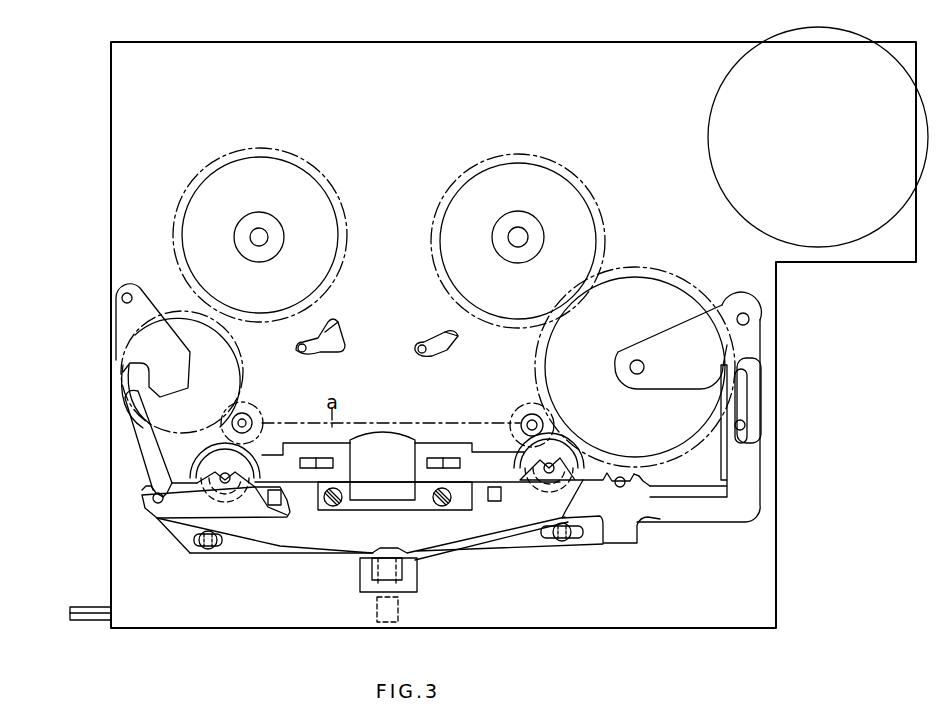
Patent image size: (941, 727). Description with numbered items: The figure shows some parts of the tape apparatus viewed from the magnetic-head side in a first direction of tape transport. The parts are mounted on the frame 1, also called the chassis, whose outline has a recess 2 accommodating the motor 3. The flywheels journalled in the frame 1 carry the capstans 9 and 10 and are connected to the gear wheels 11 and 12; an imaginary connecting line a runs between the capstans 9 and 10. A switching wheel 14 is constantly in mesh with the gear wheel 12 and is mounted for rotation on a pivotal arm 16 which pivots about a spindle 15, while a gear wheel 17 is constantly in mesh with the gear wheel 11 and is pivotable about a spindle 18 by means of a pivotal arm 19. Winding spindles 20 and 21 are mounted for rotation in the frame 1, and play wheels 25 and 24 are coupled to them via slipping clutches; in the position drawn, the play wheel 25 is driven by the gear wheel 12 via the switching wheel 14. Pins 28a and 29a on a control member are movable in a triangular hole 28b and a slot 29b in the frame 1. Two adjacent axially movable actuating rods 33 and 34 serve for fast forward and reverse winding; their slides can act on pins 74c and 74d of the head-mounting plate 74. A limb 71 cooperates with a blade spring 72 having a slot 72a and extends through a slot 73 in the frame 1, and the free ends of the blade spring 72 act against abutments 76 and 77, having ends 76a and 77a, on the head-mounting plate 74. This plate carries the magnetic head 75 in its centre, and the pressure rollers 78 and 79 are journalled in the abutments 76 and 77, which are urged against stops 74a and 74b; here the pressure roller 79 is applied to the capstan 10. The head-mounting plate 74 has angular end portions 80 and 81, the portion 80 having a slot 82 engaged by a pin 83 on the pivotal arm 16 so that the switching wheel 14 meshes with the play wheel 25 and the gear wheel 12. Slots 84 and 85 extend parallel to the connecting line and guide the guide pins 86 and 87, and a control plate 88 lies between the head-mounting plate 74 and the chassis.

The frame 1 is at (118, 130).
The chassis recess 2 is at (893, 250).
The motor 3 is at (718, 108).
The capstan 9 is at (243, 414).
The capstan 10 is at (520, 410).
The gear wheel 11 is at (266, 418).
The gear wheel 12 is at (507, 420).
The switching wheel 14 is at (665, 275).
The spindle 15 is at (750, 319).
The pivotal arm 16 is at (663, 342).
The gear wheel 17 is at (130, 378).
The spindle 18 is at (120, 300).
The pivotal arm 19 is at (150, 350).
The winding spindle 20 is at (262, 230).
The winding spindle 21 is at (521, 232).
The play wheel 24 is at (305, 156).
The play wheel 25 is at (537, 162).
The pin 28a is at (300, 349).
The triangular hole 28b is at (330, 328).
The pin 29a is at (418, 350).
The slot 29b is at (450, 332).
The actuating rod 33 is at (88, 620).
The actuating rod 34 is at (95, 607).
The limb 71 is at (386, 570).
The blade spring 72 is at (480, 548).
The slot 72a is at (410, 572).
The slot 73 is at (400, 607).
The head-mounting plate 74 is at (250, 548).
The stop 74a is at (283, 502).
The stop 74b is at (490, 500).
The pin 74c is at (335, 506).
The pin 74d is at (440, 506).
The magnetic head 75 is at (385, 436).
The abutment 76 is at (157, 520).
The pivot 76a is at (145, 500).
The abutment 77 is at (612, 500).
The lever tip 77a is at (642, 478).
The pressure roller 78 is at (190, 470).
The pressure roller 79 is at (575, 452).
The angular end portion 80 is at (752, 480).
The angular end portion 81 is at (148, 447).
The slot 82 is at (745, 385).
The pin 83 is at (742, 425).
The slot 84 is at (205, 547).
The slot 85 is at (572, 540).
The guide pin 86 is at (218, 547).
The guide pin 87 is at (560, 540).
The control plate 88 is at (440, 446).